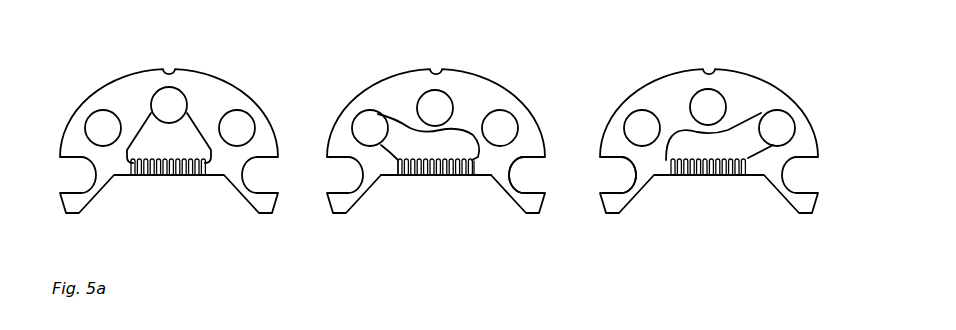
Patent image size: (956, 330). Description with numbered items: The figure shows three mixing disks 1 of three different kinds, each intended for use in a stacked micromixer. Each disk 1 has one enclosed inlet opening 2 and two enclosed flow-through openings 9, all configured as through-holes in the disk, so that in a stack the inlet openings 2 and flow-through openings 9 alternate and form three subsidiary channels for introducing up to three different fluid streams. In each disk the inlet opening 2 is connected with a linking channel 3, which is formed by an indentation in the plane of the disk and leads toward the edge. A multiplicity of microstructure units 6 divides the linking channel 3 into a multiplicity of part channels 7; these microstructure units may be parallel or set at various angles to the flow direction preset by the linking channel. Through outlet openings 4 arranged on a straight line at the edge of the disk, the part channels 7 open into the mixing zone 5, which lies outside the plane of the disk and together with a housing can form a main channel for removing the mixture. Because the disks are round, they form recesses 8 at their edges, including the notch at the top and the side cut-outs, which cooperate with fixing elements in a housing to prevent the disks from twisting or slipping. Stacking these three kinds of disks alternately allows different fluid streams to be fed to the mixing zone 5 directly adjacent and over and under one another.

The disk 1 is at (485, 90).
The inlet opening 2 is at (173, 105).
The linking channel 3 is at (400, 137).
The outlet opening 4 is at (408, 177).
The mixing zone 5 is at (442, 188).
The microstructure unit 6 is at (470, 167).
The part channel 7 is at (453, 167).
The recess 8 is at (610, 180).
The flow-through opening 9 is at (100, 128).